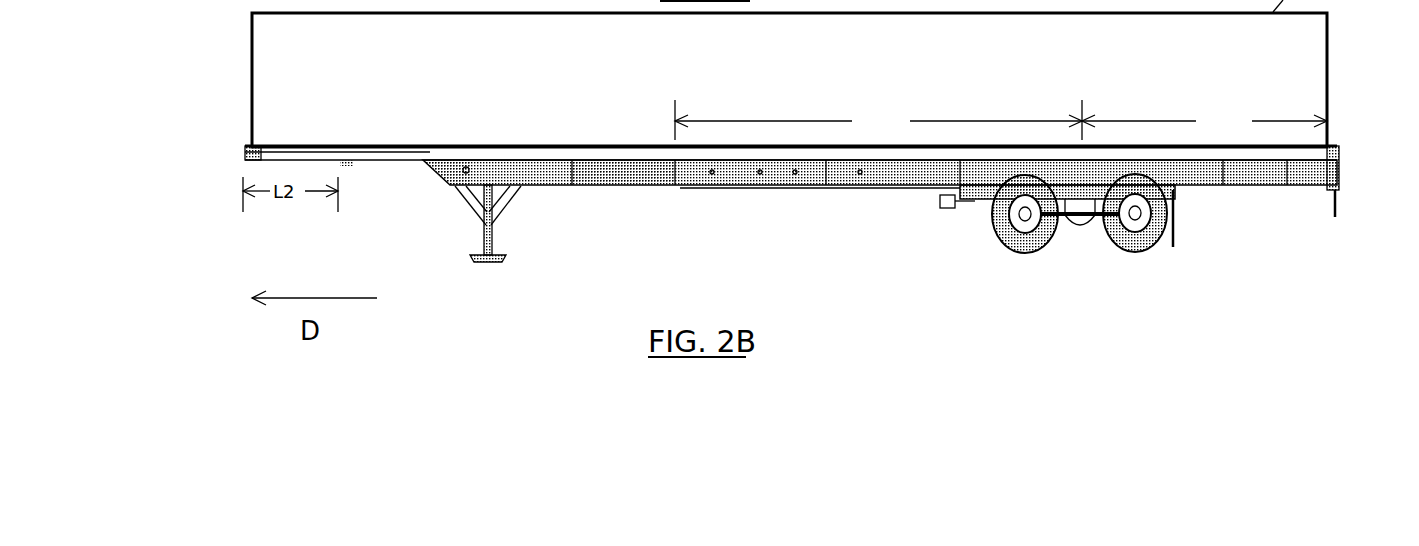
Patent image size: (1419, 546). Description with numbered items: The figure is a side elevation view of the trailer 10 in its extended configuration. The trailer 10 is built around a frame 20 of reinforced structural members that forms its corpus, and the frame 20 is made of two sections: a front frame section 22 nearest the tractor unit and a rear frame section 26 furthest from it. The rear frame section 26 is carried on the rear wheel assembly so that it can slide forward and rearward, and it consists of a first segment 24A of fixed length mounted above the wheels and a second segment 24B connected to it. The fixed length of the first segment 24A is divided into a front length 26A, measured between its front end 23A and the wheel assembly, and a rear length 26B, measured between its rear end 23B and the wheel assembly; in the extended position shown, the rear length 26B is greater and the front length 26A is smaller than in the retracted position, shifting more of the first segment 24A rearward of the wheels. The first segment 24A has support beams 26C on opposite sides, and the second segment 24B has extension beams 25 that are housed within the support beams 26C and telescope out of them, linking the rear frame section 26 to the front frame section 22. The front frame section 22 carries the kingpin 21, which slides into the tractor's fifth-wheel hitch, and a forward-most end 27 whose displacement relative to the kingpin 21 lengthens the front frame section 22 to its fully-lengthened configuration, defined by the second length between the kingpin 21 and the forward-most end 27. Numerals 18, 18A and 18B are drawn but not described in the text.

The trailer 10 is at (800, 230).
The suspension assembly 18 is at (1081, 244).
The wheels 18A is at (1015, 252).
The axle 18B is at (1068, 227).
The frame 20 is at (536, 200).
The kingpin 21 is at (352, 170).
The front frame section 22 is at (457, 232).
The front end 23A is at (246, 153).
The rear end 23B is at (1341, 176).
The first segment 24A is at (748, 202).
The second segment 24B is at (620, 194).
The extension beams 25 is at (613, 175).
The rear frame section 26 is at (856, 207).
The front length 26A is at (878, 120).
The rear length 26B is at (1204, 122).
The support beams 26C is at (830, 185).
The forward-most end 27 is at (250, 146).